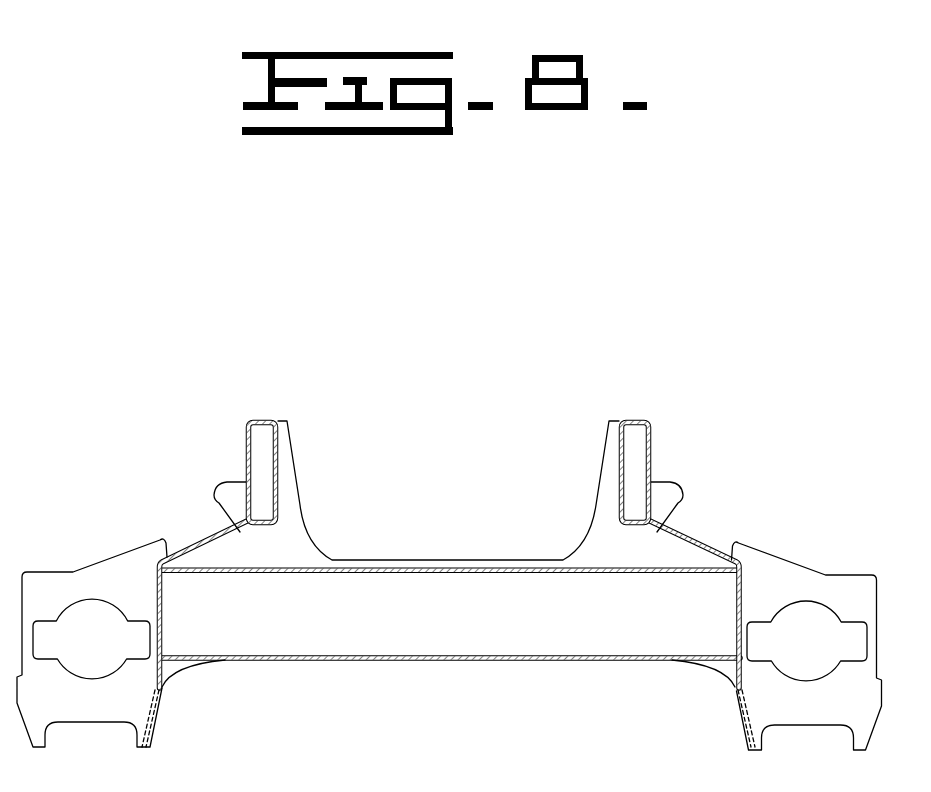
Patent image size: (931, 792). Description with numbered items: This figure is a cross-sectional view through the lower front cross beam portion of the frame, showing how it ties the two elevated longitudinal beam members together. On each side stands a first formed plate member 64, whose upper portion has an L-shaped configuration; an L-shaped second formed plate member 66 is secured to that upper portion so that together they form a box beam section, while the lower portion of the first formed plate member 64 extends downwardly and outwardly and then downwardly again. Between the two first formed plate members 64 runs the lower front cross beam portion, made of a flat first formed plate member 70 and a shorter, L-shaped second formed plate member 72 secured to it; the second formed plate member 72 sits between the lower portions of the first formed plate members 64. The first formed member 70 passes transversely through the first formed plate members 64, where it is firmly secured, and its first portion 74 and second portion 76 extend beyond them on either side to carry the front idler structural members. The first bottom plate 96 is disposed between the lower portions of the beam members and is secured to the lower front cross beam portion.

The first formed plate member 64 is at (213, 497).
The second formed plate member 66 is at (278, 462).
The first formed plate member 70 is at (63, 572).
The second formed plate member 72 is at (302, 572).
The first portion 74 is at (830, 713).
The second portion 76 is at (115, 712).
The first bottom plate 96 is at (312, 660).